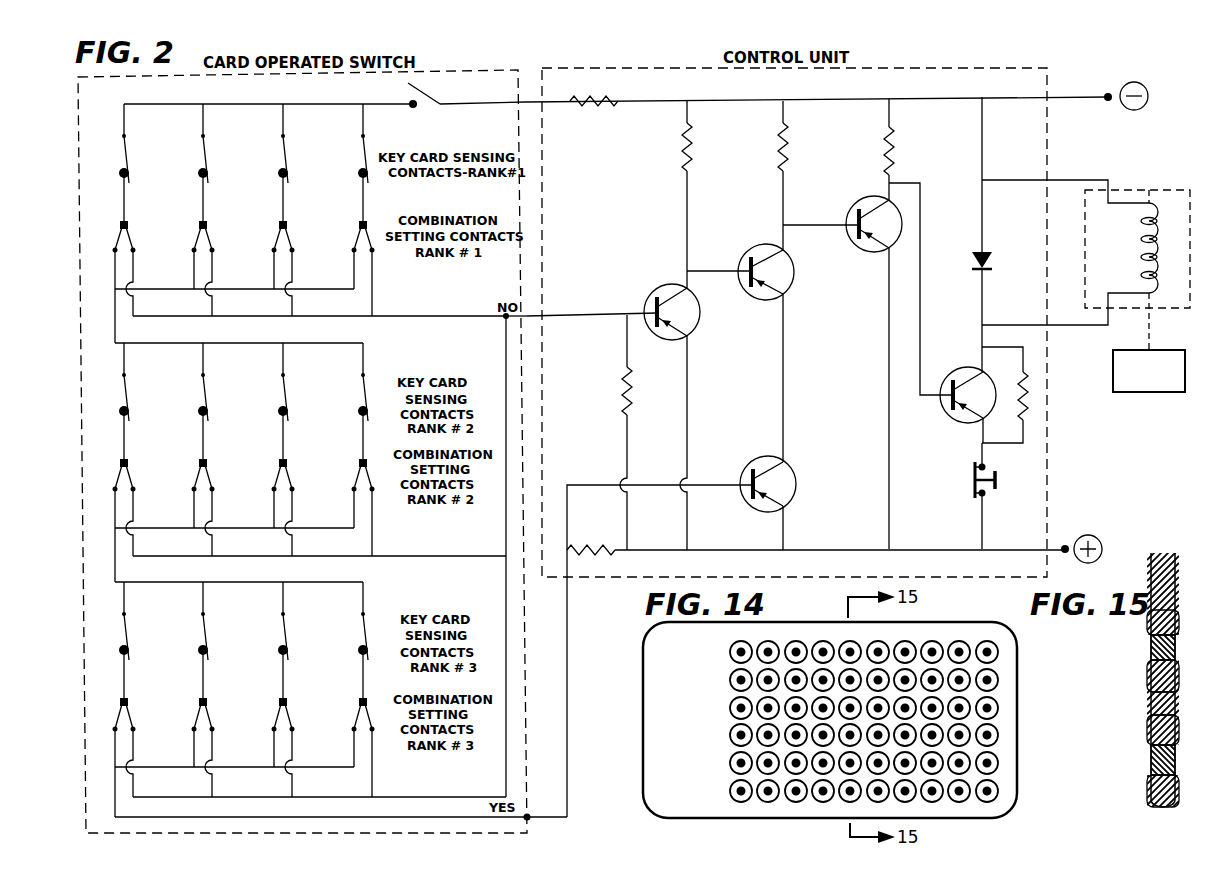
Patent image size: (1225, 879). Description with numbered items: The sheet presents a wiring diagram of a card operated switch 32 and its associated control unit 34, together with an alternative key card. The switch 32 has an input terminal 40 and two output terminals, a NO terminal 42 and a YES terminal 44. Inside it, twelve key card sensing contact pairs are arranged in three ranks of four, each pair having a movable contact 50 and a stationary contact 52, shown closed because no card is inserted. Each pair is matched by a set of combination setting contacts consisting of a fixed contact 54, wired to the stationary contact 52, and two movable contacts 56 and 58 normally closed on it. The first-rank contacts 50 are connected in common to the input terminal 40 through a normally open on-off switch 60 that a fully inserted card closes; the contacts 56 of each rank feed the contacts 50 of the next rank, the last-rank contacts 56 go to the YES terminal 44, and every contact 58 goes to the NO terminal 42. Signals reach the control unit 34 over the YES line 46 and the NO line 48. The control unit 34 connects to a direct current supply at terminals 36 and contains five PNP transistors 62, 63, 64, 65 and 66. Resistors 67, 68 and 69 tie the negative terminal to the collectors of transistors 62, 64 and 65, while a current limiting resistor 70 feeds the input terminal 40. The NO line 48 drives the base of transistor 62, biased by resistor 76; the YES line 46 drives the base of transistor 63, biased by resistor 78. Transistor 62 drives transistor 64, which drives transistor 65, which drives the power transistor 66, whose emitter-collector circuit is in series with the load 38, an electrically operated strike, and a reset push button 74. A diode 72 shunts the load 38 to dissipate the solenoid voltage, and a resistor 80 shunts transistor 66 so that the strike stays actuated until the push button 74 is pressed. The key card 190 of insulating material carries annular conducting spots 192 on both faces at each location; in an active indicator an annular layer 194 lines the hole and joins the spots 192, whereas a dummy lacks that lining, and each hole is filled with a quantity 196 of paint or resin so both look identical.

In FIG. 2, the card operated switch 32 is at (77, 158).
In FIG. 2, the control unit 34 is at (625, 69).
In FIG. 2, the terminals 36 is at (1106, 104).
In FIG. 2, the load 38 is at (1178, 190).
In FIG. 2, the input terminal 40 is at (526, 100).
In FIG. 2, the NO terminal 42 is at (542, 302).
In FIG. 2, the YES terminal 44 is at (527, 817).
In FIG. 2, the YES line 46 is at (567, 706).
In FIG. 2, the NO line 48 is at (586, 318).
In FIG. 2, the movable contact 50 is at (377, 618).
In FIG. 2, the stationary contact 52 is at (359, 650).
In FIG. 2, the fixed contact 54 is at (372, 684).
In FIG. 2, the movable contact 56 is at (352, 731).
In FIG. 2, the movable contact 58 is at (380, 710).
In FIG. 2, the on-off switch 60 is at (432, 100).
In FIG. 2, the transistor 62 is at (668, 345).
In FIG. 2, the transistor 63 is at (800, 477).
In FIG. 2, the transistor 64 is at (762, 300).
In FIG. 2, the transistor 65 is at (870, 258).
In FIG. 2, the power transistor 66 is at (948, 422).
In FIG. 2, the resistor 67 is at (680, 148).
In FIG. 2, the resistor 68 is at (780, 148).
In FIG. 2, the resistor 69 is at (885, 132).
In FIG. 2, the current limiting resistor 70 is at (603, 107).
In FIG. 2, the diode 72 is at (990, 258).
In FIG. 2, the reset push button 74 is at (1000, 479).
In FIG. 2, the biasing resistor 76 is at (621, 386).
In FIG. 2, the biasing resistor 78 is at (589, 548).
In FIG. 2, the resistor 80 is at (1028, 413).
In FIG. 14, the card 190 is at (1018, 680).
In FIG. 15, the card 190 is at (1150, 706).
In FIG. 14, the annular spots 192 is at (1000, 764).
In FIG. 15, the annular spots 192 is at (1150, 673).
In FIG. 15, the annular layer 194 is at (1150, 637).
In FIG. 15, the quantity of paint, resin or other suitable material 196 is at (1150, 650).